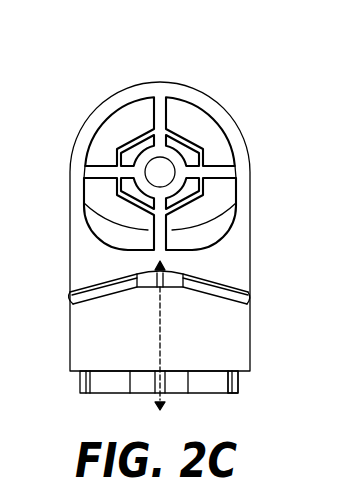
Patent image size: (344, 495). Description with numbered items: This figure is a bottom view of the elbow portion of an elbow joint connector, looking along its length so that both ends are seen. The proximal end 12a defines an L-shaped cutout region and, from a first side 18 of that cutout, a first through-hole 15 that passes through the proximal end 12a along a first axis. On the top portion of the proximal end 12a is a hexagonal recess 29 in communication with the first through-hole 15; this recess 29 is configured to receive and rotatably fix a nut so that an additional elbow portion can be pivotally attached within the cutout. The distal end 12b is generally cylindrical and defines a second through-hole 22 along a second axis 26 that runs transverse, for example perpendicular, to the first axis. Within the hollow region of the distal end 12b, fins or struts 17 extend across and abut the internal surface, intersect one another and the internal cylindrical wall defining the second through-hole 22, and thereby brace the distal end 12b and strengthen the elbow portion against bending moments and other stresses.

The proximal end 12a is at (128, 87).
The hexagonal recess 29 is at (175, 140).
The first through-hole 15 is at (158, 172).
The first side 18 is at (232, 248).
The second through-hole 22 is at (176, 274).
The second axis 26 is at (160, 338).
The distal end 12b is at (108, 371).
The fins or struts 17 is at (222, 382).